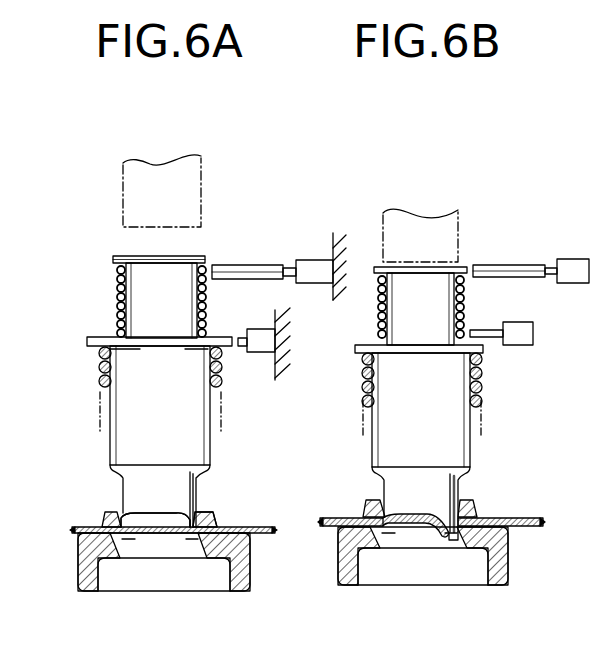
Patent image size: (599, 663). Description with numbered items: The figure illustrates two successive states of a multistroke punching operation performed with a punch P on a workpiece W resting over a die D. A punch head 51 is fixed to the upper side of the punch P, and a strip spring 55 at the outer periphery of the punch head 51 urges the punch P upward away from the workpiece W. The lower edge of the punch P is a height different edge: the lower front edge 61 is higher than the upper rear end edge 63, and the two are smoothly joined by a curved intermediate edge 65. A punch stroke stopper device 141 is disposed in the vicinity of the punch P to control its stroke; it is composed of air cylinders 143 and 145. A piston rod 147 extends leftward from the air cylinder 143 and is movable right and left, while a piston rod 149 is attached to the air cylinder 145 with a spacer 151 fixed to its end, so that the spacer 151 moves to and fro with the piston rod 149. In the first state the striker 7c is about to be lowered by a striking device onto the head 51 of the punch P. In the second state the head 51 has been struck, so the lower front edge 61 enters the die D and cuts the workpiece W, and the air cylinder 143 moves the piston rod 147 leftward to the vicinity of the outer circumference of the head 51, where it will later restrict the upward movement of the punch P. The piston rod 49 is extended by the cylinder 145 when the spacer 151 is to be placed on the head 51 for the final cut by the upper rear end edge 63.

In FIG. 6A, the striker 7c is at (152, 162).
In FIG. 6B, the striker 7c is at (408, 212).
In FIG. 6A, the punch head 51 is at (120, 272).
In FIG. 6B, the punch head 51 is at (393, 304).
In FIG. 6A, the strip spring 55 is at (118, 312).
In FIG. 6A, the piston rod 49 is at (100, 378).
In FIG. 6A, the punch stroke stopper device 141 is at (284, 240).
In FIG. 6A, the spacer 151 is at (240, 271).
In FIG. 6B, the spacer 151 is at (531, 271).
In FIG. 6A, the piston rod 149 is at (289, 268).
In FIG. 6A, the air cylinder 145 is at (318, 258).
In FIG. 6A, the piston rod 147 is at (241, 347).
In FIG. 6B, the piston rod 147 is at (489, 330).
In FIG. 6A, the air cylinder 143 is at (265, 353).
In FIG. 6B, the air cylinder 143 is at (519, 345).
In FIG. 6A, the upper rear end edge 63 is at (130, 512).
In FIG. 6A, the intermediate edge 65 is at (204, 514).
In FIG. 6B, the intermediate edge 65 is at (478, 512).
In FIG. 6A, the lower front edge 61 is at (214, 520).
In FIG. 6B, the lower front edge 61 is at (452, 536).
In FIG. 6A, the punch P is at (198, 488).
In FIG. 6B, the punch P is at (460, 490).
In FIG. 6A, the workpiece W is at (80, 527).
In FIG. 6B, the workpiece W is at (342, 518).
In FIG. 6A, the die D is at (246, 569).
In FIG. 6B, the die D is at (508, 569).